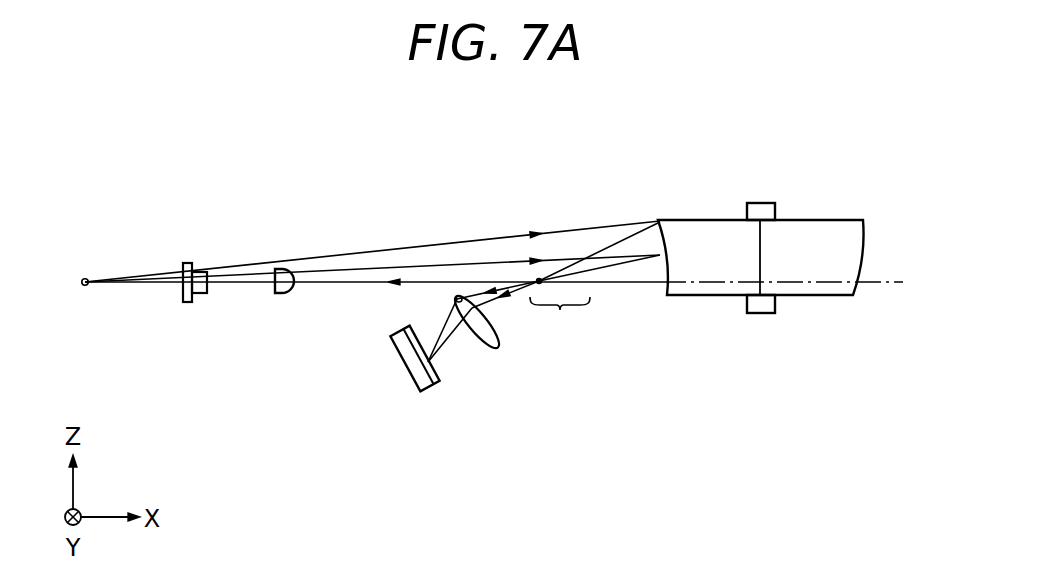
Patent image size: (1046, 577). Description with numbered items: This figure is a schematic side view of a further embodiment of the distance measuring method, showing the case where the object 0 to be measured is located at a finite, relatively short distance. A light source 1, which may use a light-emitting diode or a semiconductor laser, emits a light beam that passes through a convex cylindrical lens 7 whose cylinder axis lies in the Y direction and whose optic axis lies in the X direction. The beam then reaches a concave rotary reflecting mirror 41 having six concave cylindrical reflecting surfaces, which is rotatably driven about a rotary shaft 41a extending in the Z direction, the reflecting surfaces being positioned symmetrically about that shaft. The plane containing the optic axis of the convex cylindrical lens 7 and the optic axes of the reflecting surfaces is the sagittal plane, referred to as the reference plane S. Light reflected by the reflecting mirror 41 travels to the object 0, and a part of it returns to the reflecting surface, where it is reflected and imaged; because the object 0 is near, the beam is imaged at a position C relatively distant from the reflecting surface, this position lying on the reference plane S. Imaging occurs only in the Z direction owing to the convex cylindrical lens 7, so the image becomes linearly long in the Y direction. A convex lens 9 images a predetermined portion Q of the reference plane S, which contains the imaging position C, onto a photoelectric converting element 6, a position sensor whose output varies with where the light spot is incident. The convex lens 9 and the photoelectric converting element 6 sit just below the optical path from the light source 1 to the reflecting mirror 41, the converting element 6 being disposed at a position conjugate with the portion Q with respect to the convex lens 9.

The object 0 is at (86, 286).
The light source 1 is at (200, 294).
The convex cylindrical lens 7 is at (288, 294).
The convex lens 9 is at (484, 343).
The photoelectric converting element 6 is at (405, 364).
The imaging position C is at (544, 285).
The predetermined portion Q is at (560, 320).
The concave rotary reflecting mirror 41 is at (696, 232).
The rotary shaft 41a is at (764, 210).
The reference plane S is at (892, 281).